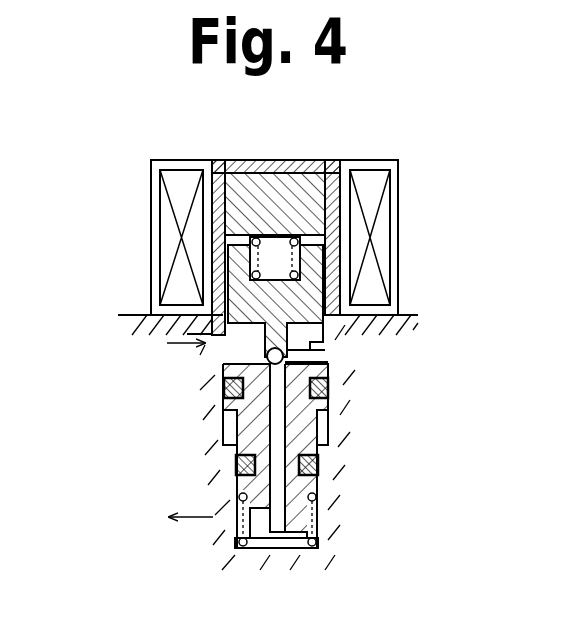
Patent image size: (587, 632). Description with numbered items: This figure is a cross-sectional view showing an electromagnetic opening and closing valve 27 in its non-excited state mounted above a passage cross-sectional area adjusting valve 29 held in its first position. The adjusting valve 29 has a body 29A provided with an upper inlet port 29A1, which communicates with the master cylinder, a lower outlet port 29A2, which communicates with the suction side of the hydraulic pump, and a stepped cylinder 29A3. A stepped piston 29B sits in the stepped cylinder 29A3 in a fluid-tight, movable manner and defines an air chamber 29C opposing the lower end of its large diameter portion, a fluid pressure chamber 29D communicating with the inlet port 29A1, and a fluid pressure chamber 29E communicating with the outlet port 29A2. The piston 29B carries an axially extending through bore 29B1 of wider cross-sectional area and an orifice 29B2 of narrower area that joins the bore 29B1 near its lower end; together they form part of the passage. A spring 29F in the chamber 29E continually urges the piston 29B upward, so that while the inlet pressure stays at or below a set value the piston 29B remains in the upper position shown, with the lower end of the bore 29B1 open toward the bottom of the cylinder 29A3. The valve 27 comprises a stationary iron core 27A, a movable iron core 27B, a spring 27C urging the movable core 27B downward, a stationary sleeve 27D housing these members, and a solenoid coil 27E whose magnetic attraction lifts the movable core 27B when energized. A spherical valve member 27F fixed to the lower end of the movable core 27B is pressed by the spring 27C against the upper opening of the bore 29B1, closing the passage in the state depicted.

The electromagnetic opening and closing valve 27 is at (135, 219).
The stationary iron core 27A is at (273, 188).
The movable iron core 27B is at (240, 287).
The spring 27C is at (298, 242).
The stationary sleeve 27D is at (230, 160).
The solenoid coil 27E is at (173, 192).
The valve member 27F is at (284, 357).
The passage cross-sectional area adjusting valve 29 is at (171, 465).
The body 29A is at (223, 482).
The inlet port 29A1 is at (203, 345).
The outlet port 29A2 is at (215, 522).
The stepped cylinder 29A3 is at (330, 432).
The stepped piston 29B is at (305, 522).
The through bore 29B1 is at (275, 528).
The orifice 29B2 is at (257, 530).
The air chamber 29C is at (227, 418).
The fluid pressure chamber 29D is at (313, 340).
The fluid pressure chamber 29E is at (313, 558).
The spring 29F is at (315, 502).